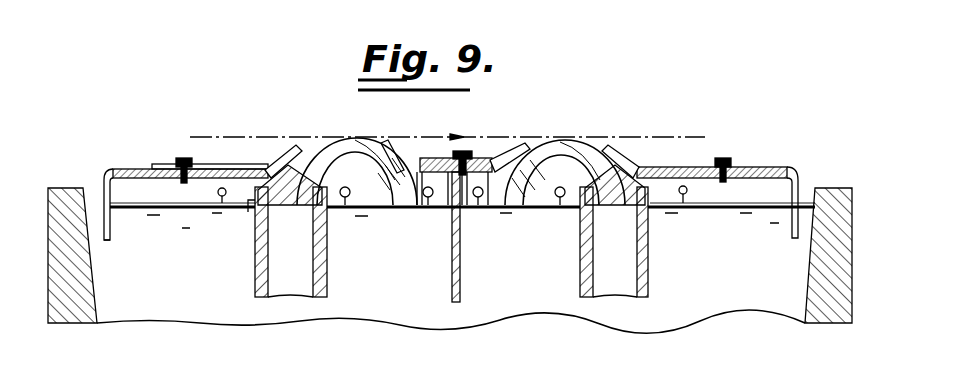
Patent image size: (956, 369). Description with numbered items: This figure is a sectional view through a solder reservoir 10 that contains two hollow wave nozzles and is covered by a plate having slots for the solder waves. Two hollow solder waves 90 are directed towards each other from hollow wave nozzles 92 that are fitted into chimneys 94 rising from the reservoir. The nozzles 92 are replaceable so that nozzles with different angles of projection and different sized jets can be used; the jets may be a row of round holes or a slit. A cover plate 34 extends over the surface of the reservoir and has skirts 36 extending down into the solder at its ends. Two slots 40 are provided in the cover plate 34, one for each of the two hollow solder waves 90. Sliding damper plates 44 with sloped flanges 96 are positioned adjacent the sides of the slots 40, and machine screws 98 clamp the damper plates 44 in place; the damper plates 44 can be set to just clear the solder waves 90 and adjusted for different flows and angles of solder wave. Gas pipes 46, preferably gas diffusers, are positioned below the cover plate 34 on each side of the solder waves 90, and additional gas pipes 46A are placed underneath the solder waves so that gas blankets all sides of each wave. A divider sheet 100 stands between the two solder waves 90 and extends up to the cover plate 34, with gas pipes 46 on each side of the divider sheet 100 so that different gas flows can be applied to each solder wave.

The housing base 10 is at (830, 323).
The cover plate 34 is at (112, 172).
The skirts 36 is at (112, 228).
The slots 40 is at (400, 152).
The sliding damper plates 44 is at (222, 167).
The gas pipes 46 is at (218, 192).
The gas pipes 46A is at (343, 200).
The hollow solder waves 90 is at (345, 137).
The hollow wave nozzles 92 is at (250, 215).
The chimneys 94 is at (258, 265).
The sloped flanges 96 is at (278, 155).
The machine screws 98 is at (184, 157).
The divider sheet 100 is at (460, 282).